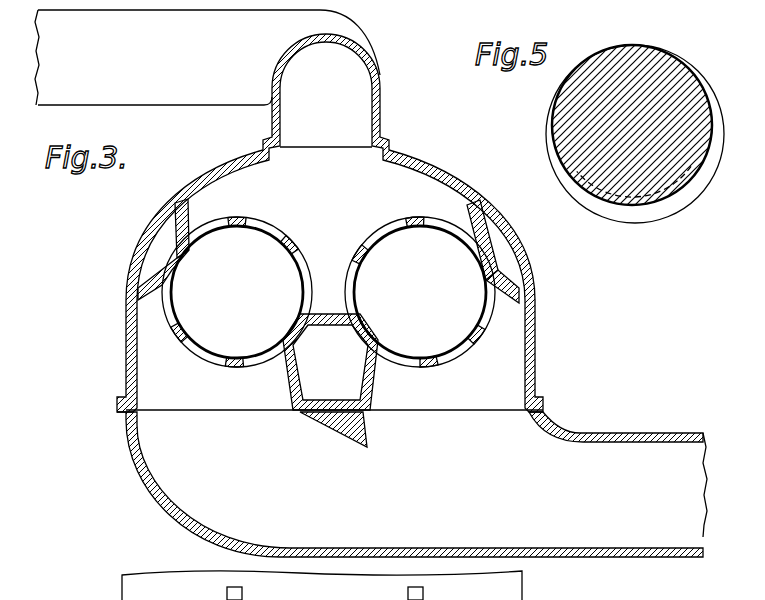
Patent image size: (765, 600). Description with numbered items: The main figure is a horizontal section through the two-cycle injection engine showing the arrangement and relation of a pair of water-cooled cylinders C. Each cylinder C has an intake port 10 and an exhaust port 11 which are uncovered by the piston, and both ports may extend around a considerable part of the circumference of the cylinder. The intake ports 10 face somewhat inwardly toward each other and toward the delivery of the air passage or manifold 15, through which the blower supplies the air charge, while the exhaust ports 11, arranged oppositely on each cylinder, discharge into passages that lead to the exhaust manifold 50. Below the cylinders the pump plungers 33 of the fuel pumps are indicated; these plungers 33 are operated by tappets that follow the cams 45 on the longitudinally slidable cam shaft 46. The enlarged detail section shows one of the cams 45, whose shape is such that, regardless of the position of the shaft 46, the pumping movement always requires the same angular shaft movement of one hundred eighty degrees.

In FIG. 3, the air passage or manifold 15 is at (207, 57).
In FIG. 3, the intake port 10 is at (264, 224).
In FIG. 3, the exhaust port 11 is at (170, 328).
In FIG. 3, the water-cooled cylinder C is at (163, 263).
In FIG. 3, the exhaust manifold 50 is at (412, 484).
In FIG. 3, the pump plunger 33 is at (440, 594).
In FIG. 5, the cams 45 is at (658, 206).
In FIG. 5, the longitudinally slidable cam shaft 46 is at (657, 77).